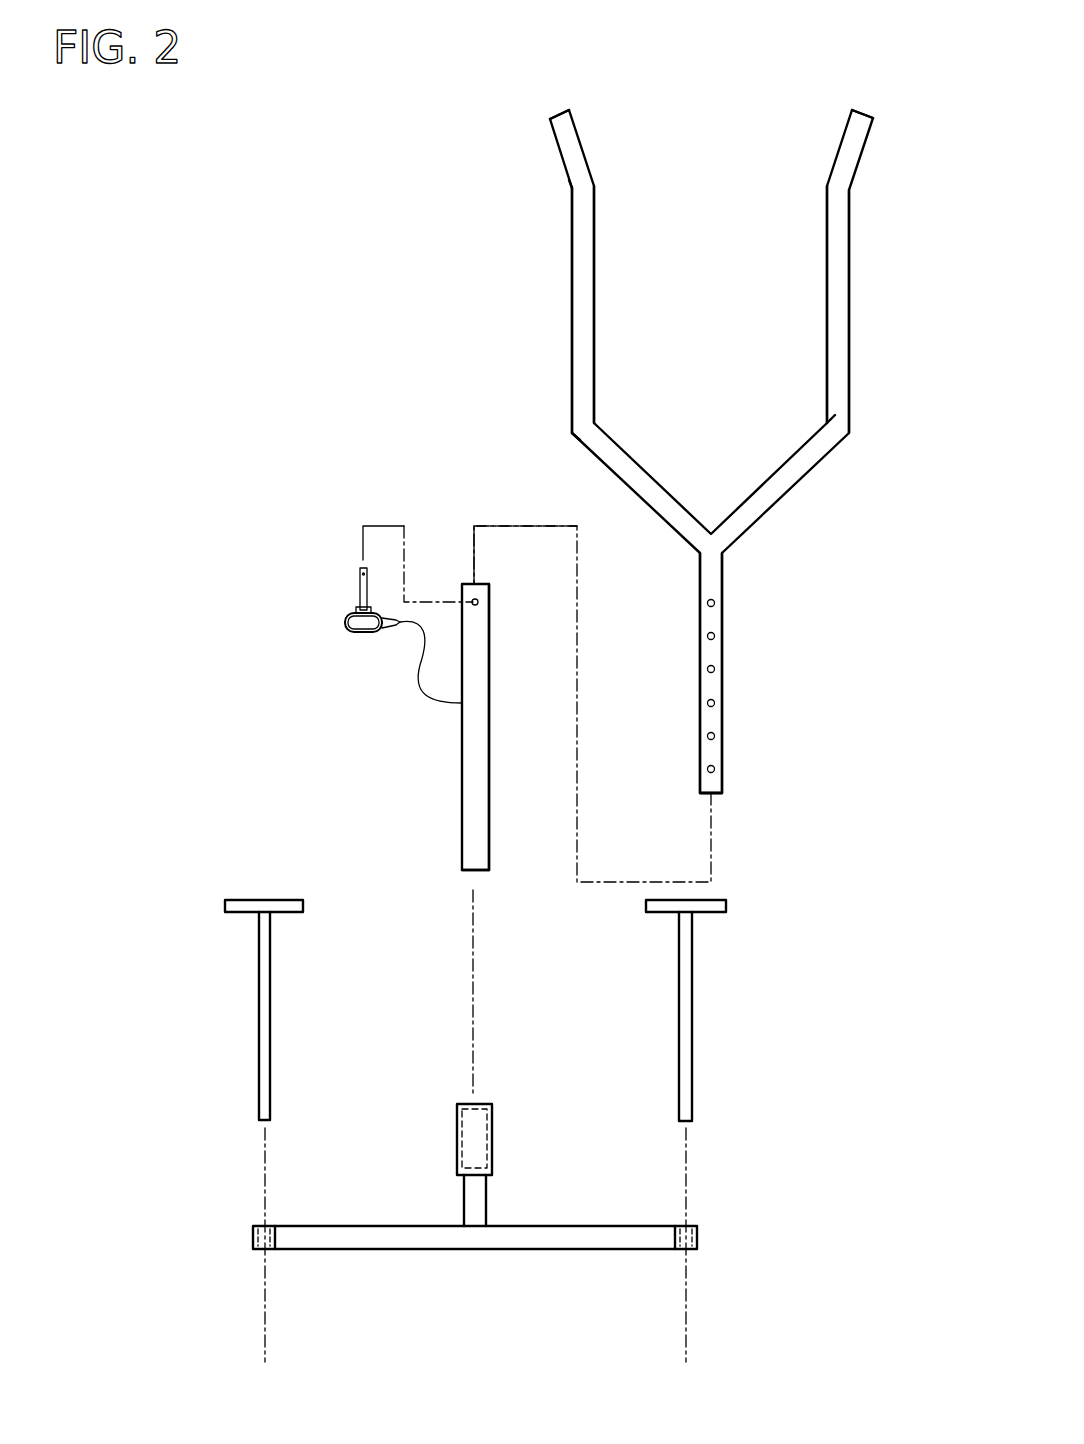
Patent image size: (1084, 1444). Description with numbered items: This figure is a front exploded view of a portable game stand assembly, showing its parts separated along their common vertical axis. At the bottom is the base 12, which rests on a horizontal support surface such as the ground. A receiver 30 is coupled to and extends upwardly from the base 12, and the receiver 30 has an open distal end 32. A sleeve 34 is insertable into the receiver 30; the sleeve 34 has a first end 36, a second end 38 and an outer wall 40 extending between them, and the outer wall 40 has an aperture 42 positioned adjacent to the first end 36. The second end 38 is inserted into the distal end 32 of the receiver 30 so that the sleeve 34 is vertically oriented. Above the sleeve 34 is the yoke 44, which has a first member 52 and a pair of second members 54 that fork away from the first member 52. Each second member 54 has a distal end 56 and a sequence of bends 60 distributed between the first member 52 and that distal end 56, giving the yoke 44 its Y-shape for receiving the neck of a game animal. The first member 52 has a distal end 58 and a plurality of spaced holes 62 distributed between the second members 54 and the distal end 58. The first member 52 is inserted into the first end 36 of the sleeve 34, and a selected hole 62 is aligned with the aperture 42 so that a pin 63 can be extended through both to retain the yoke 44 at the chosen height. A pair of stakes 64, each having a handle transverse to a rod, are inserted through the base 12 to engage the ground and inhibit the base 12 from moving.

The base 12 is at (377, 1270).
The receiver 30 is at (457, 1128).
The distal end 32 is at (471, 1104).
The sleeve 34 is at (462, 775).
The first end 36 is at (462, 584).
The second end 38 is at (467, 872).
The outer wall 40 is at (478, 729).
The aperture 42 is at (478, 602).
The yoke 44 is at (552, 340).
The first member 52 is at (728, 703).
The second members 54 is at (594, 230).
The distal end 56 is at (560, 110).
The distal end 58 is at (717, 793).
The bends 60 is at (572, 188).
The holes 62 is at (711, 703).
The pin 63 is at (358, 578).
The stakes 64 is at (250, 973).